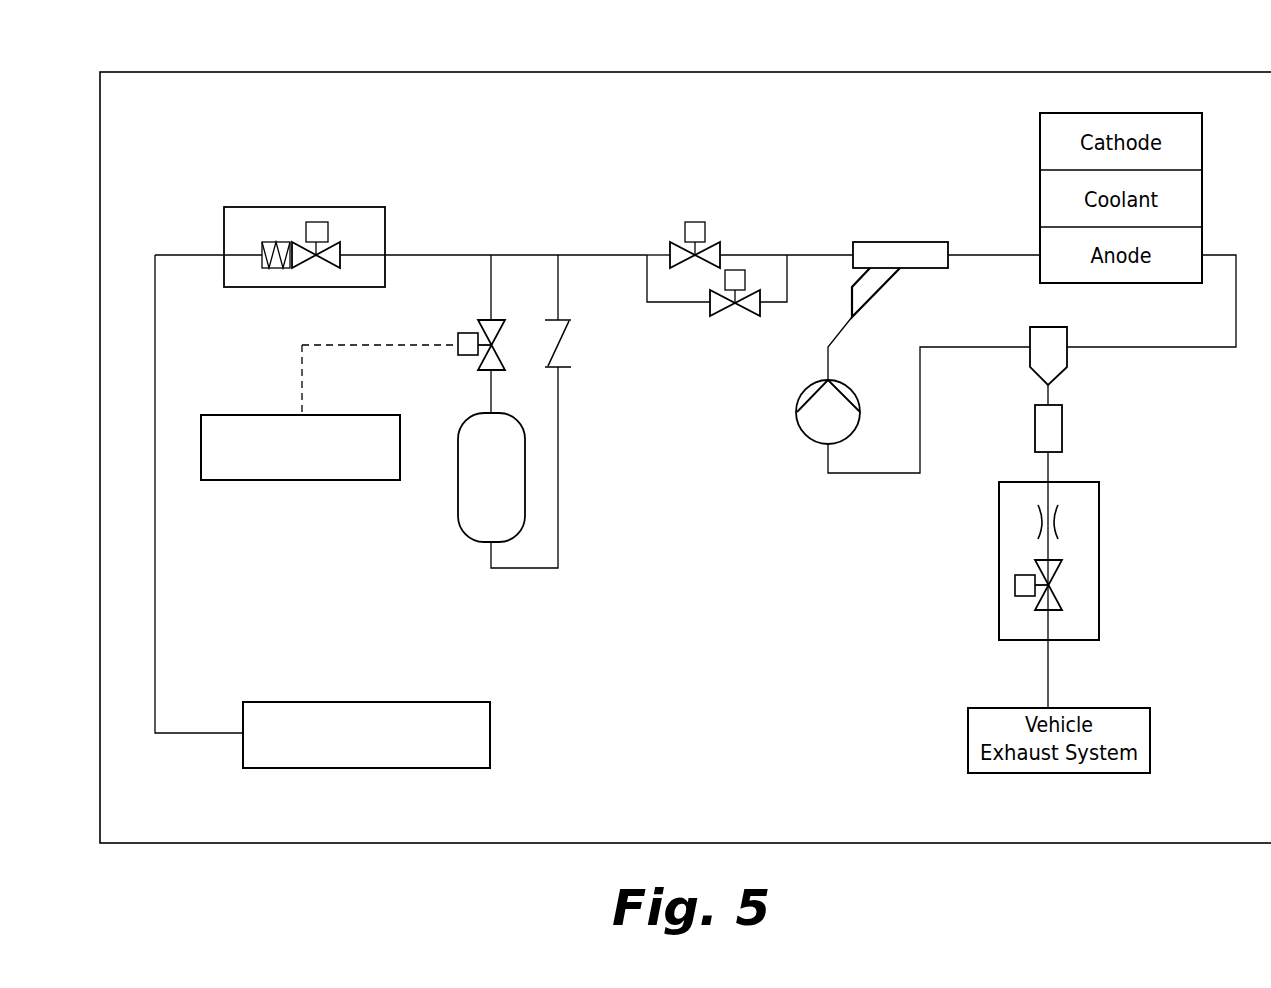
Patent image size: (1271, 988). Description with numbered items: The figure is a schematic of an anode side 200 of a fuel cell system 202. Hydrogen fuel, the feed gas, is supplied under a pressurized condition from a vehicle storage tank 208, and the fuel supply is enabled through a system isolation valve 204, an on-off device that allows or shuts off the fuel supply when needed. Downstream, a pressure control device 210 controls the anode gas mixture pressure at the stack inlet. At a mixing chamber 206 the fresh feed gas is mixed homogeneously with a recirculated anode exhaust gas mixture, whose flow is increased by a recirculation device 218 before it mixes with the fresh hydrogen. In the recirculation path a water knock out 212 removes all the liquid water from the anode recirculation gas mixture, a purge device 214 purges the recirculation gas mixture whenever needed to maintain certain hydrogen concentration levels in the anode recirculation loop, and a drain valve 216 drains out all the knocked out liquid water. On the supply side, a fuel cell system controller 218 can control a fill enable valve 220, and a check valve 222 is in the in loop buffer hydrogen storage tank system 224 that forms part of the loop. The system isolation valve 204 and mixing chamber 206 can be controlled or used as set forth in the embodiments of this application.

The anode side 200 is at (620, 70).
The fuel cell system 202 is at (310, 146).
The system isolation valve 204 is at (305, 206).
The mixing chamber 206 is at (900, 241).
The vehicle storage tank 208 is at (368, 769).
The pressure control device 210 is at (682, 188).
The water knock out 212 is at (1068, 357).
The purge device 214 is at (1035, 428).
The drain valve 216 is at (1100, 563).
The recirculation device / fuel cell system controller 218 is at (251, 414).
The fill enable valve 220 is at (465, 332).
The check valve 222 is at (564, 366).
The in loop buffer hydrogen storage tank system 224 is at (458, 475).